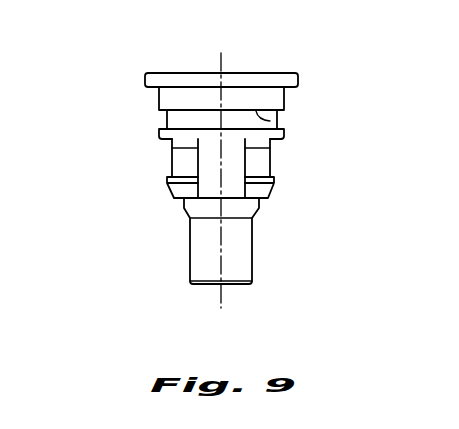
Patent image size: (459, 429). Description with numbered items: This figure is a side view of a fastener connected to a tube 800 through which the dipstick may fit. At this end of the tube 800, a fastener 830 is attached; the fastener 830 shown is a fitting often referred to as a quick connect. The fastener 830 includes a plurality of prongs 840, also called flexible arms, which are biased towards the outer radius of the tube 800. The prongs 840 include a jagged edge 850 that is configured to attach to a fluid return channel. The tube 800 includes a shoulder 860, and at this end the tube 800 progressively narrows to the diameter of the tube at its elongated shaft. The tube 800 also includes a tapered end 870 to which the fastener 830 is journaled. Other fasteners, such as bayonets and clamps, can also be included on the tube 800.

The tube 800 is at (97, 98).
The fastener 830 is at (233, 73).
The shoulder 860 is at (143, 80).
The tapered end 870 is at (270, 121).
The prongs 840 is at (185, 162).
The jagged edge 850 is at (163, 192).